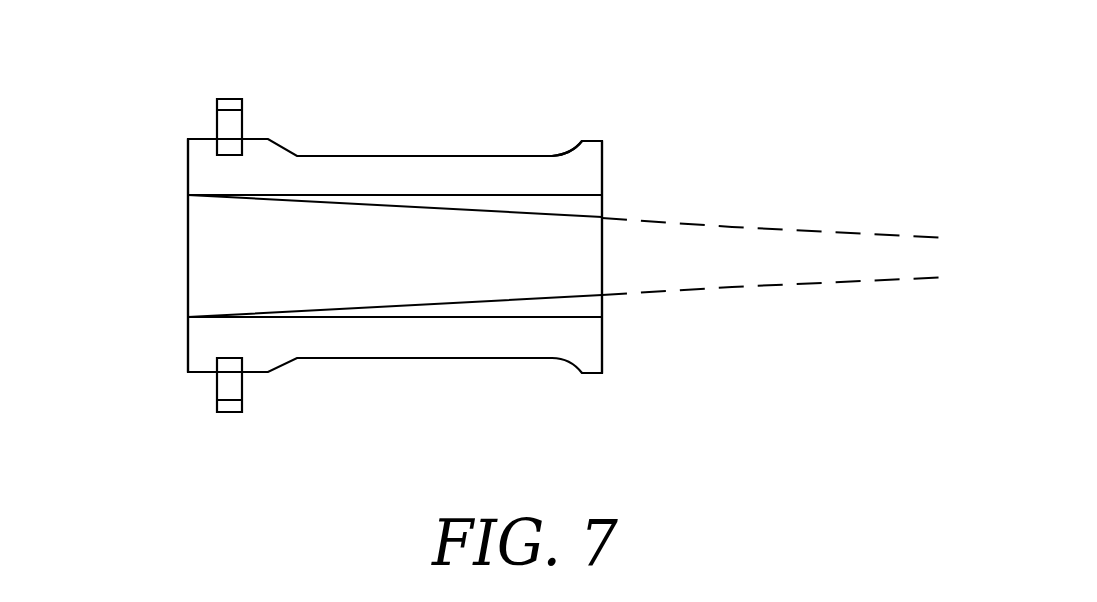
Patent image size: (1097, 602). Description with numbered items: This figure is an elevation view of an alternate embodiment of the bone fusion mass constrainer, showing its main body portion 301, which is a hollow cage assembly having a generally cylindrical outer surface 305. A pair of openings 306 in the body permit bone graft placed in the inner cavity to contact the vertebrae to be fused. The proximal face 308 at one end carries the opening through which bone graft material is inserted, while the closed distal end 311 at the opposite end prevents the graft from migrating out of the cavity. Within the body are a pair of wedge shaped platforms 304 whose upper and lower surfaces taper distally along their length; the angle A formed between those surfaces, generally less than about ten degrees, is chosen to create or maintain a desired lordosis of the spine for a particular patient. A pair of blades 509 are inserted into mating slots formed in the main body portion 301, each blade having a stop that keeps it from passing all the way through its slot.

The main body portion 301 is at (337, 138).
The wedge shaped platforms 304 is at (560, 282).
The cylindrical outer surface 305 is at (590, 155).
The openings 306 is at (483, 155).
The proximal face 308 is at (188, 348).
The closed distal end 311 is at (605, 352).
The blades 509 is at (232, 98).
The angle A is at (732, 227).